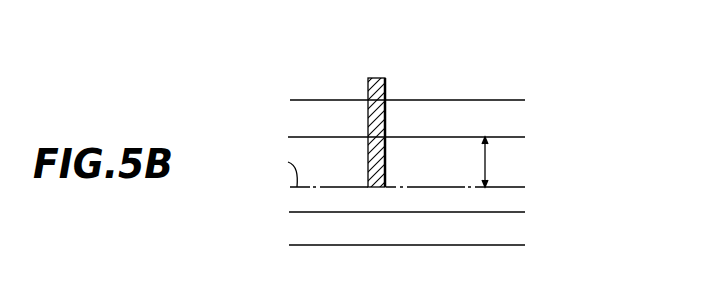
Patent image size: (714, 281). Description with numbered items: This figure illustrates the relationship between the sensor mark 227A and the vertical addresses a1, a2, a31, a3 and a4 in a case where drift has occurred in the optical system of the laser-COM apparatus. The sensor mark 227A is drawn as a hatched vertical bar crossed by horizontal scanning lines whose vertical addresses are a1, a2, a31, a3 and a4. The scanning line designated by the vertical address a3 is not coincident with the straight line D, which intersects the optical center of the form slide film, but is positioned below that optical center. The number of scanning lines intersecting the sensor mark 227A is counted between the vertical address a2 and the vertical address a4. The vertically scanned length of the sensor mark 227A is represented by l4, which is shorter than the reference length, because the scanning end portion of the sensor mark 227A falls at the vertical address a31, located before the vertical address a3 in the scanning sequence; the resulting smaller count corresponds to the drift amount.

The sensor mark 227A is at (379, 78).
The vertical address a1 is at (419, 103).
The vertical address a2 is at (418, 138).
The vertical address a31 is at (424, 190).
The vertical address a3 is at (419, 213).
The vertical address a4 is at (419, 247).
The straight line D is at (284, 170).
The length of the sensor mark l4 is at (486, 162).